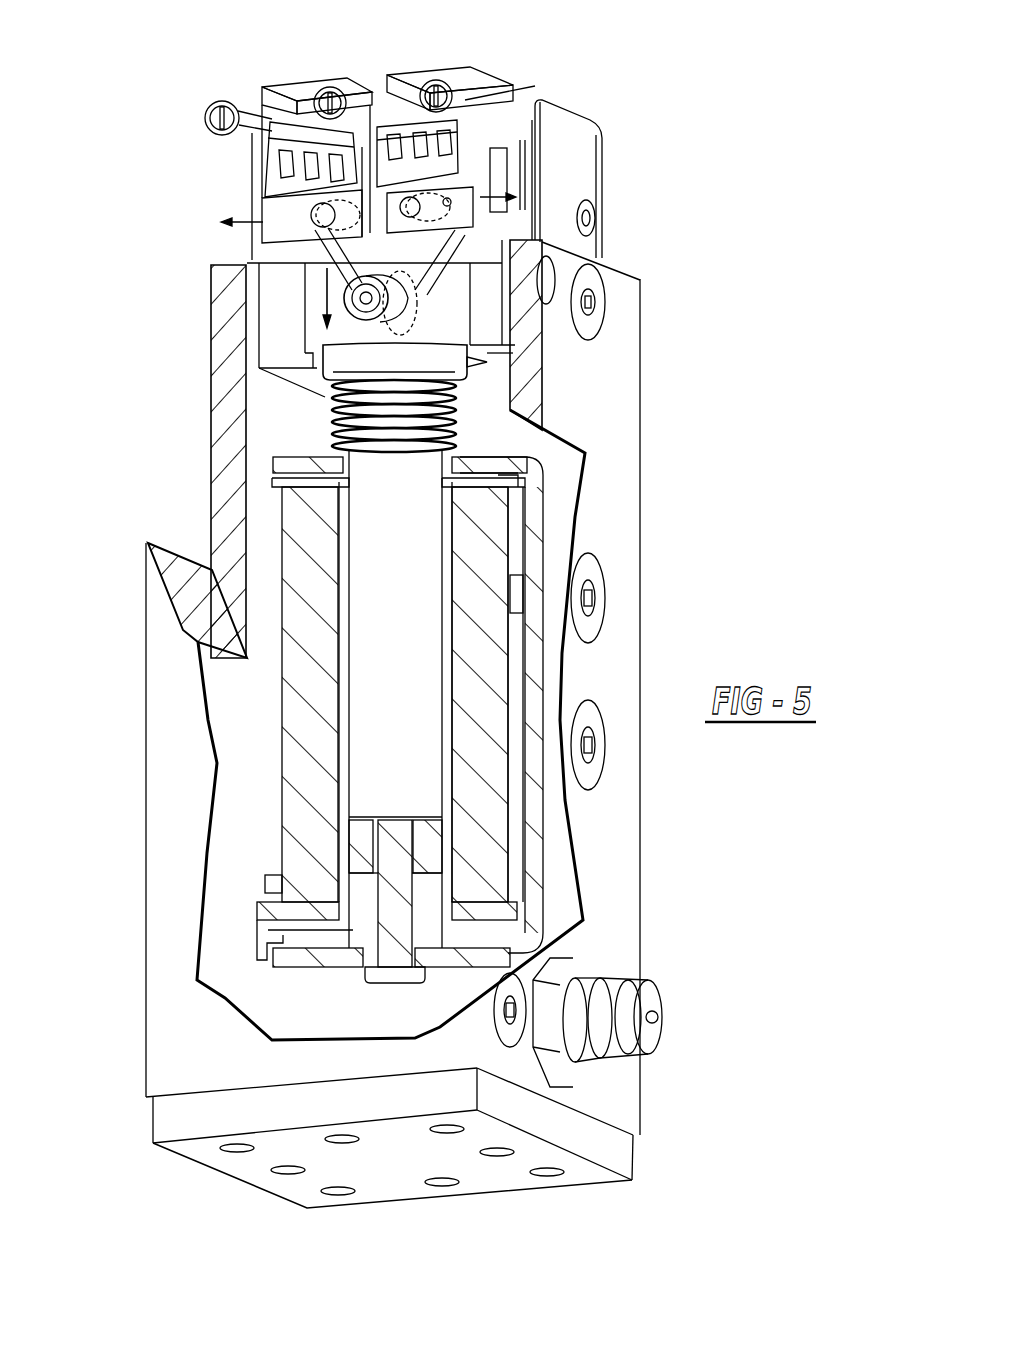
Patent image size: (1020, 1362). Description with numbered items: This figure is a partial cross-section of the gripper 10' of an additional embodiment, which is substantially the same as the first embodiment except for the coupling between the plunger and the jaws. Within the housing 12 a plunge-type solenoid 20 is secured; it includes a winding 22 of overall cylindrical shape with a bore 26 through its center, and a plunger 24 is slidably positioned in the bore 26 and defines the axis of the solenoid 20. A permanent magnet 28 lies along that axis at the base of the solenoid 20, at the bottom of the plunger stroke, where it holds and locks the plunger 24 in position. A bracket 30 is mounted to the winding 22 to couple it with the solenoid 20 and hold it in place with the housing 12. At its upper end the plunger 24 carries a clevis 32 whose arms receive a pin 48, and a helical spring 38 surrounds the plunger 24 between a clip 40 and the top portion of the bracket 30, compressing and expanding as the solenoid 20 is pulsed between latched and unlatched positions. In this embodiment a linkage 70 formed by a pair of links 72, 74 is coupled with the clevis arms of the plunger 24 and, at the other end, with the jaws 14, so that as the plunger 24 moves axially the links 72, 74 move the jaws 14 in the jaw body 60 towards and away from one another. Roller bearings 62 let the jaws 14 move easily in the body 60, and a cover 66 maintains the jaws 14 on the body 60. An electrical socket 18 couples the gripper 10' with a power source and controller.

The gripper 10' is at (793, 236).
The housing 12 is at (618, 657).
The jaws 14 is at (305, 80).
The electrical socket 18 is at (658, 1007).
The solenoid 20 is at (262, 723).
The winding 22 is at (478, 580).
The plunger 24 is at (382, 548).
The bore 26 is at (440, 840).
The permanent magnet 28 is at (364, 927).
The bracket 30 is at (527, 468).
The clevis 32 is at (338, 334).
The helical spring 38 is at (340, 410).
The clip 40 is at (448, 363).
The pin 48 is at (360, 298).
The jaw body 60 is at (497, 288).
The roller bearings 62 is at (288, 167).
The cover 66 is at (580, 148).
The linkage 70 is at (307, 253).
The link 72 is at (350, 258).
The link 74 is at (420, 253).